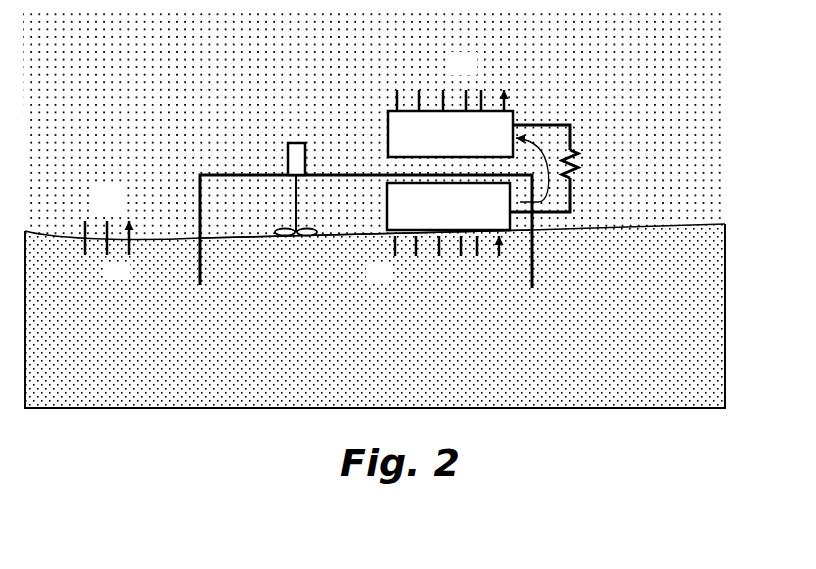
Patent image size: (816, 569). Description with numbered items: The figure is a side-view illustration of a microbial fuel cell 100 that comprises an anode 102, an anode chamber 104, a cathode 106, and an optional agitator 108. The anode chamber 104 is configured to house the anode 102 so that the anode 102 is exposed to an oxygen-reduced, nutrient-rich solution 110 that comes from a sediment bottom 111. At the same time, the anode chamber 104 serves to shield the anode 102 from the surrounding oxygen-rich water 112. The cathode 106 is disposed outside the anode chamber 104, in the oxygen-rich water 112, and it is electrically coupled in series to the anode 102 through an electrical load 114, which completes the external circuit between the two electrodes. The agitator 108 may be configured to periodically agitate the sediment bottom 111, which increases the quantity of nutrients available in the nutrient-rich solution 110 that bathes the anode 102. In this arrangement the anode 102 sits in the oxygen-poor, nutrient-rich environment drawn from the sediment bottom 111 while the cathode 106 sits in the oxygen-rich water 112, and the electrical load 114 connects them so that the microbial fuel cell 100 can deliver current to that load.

The microbial fuel cell 100 is at (599, 83).
The anode 102 is at (387, 216).
The anode chamber 104 is at (532, 258).
The cathode 106 is at (388, 146).
The agitator 108 is at (290, 236).
The nutrient-rich solution 110 is at (259, 218).
The sediment bottom 111 is at (480, 310).
The oxygen-rich water 112 is at (126, 81).
The electrical load 114 is at (576, 156).